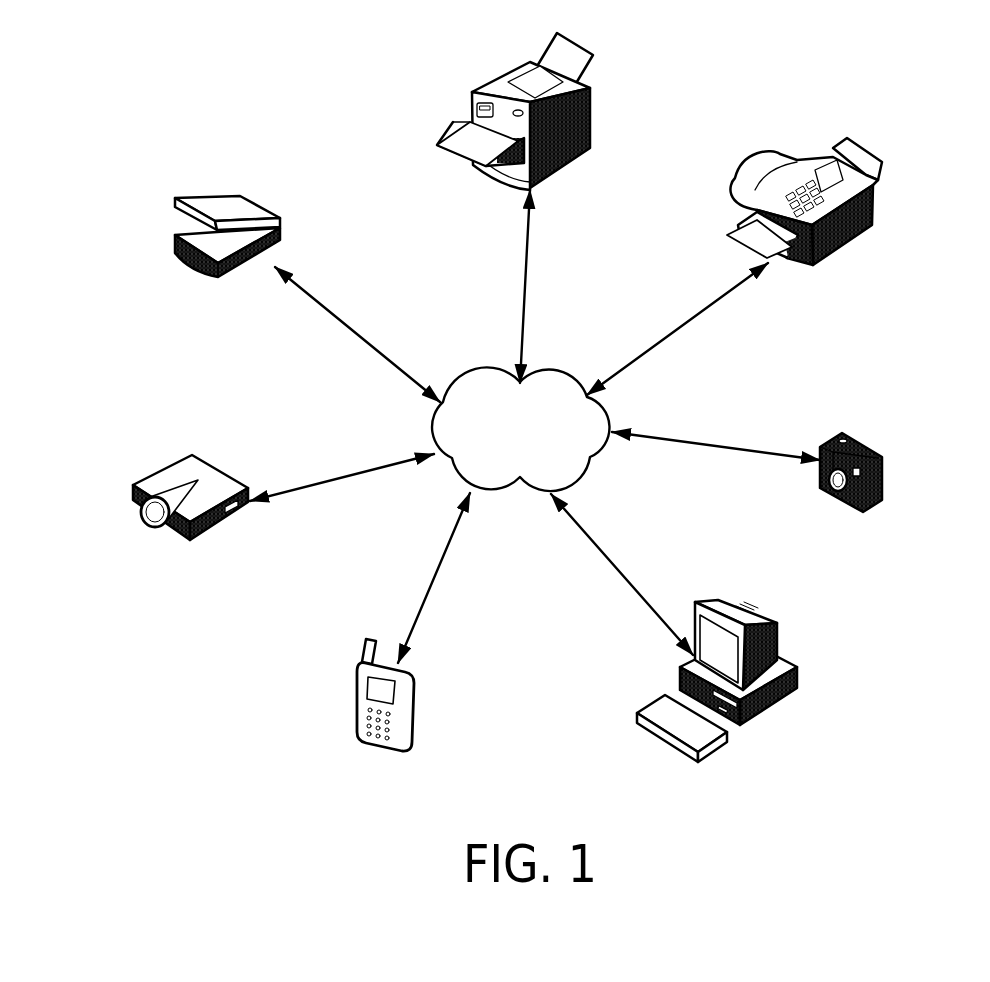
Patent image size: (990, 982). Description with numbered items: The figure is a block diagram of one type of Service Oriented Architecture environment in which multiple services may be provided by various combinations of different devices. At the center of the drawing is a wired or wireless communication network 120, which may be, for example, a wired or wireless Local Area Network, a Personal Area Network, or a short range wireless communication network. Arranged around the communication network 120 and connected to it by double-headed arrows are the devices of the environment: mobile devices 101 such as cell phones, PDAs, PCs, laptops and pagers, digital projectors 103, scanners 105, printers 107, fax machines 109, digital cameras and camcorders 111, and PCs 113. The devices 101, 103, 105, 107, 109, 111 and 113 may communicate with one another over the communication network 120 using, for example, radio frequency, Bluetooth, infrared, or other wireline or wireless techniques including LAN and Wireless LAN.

The mobile device 101 is at (417, 677).
The digital projector 103 is at (223, 470).
The scanner 105 is at (262, 203).
The printer 107 is at (590, 113).
The fax machine 109 is at (875, 197).
The digital camera and camcorder 111 is at (883, 455).
The PC 113 is at (778, 653).
The communication network 120 is at (548, 367).